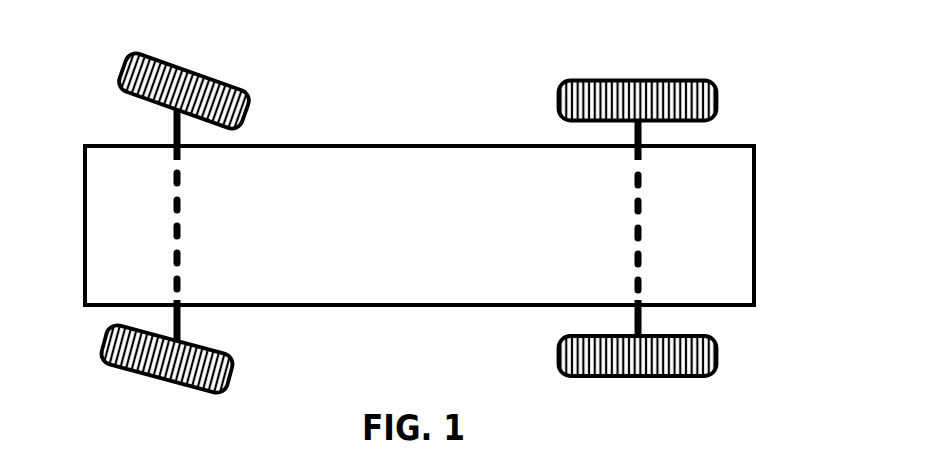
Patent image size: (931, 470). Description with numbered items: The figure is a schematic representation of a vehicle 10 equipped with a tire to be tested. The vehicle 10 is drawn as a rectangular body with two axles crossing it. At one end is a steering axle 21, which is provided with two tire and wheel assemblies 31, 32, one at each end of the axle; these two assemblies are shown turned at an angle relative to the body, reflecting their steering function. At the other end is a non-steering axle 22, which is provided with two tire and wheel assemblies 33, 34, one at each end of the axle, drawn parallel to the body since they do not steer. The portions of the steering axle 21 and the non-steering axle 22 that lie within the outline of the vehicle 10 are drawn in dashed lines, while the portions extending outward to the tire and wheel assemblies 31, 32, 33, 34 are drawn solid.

The vehicle 10 is at (412, 108).
The steering axle 21 is at (179, 228).
The non-steering axle 22 is at (637, 230).
The tire and wheel assembly 31 is at (163, 61).
The tire and wheel assembly 32 is at (158, 380).
The tire and wheel assembly 33 is at (635, 79).
The tire and wheel assembly 34 is at (636, 378).